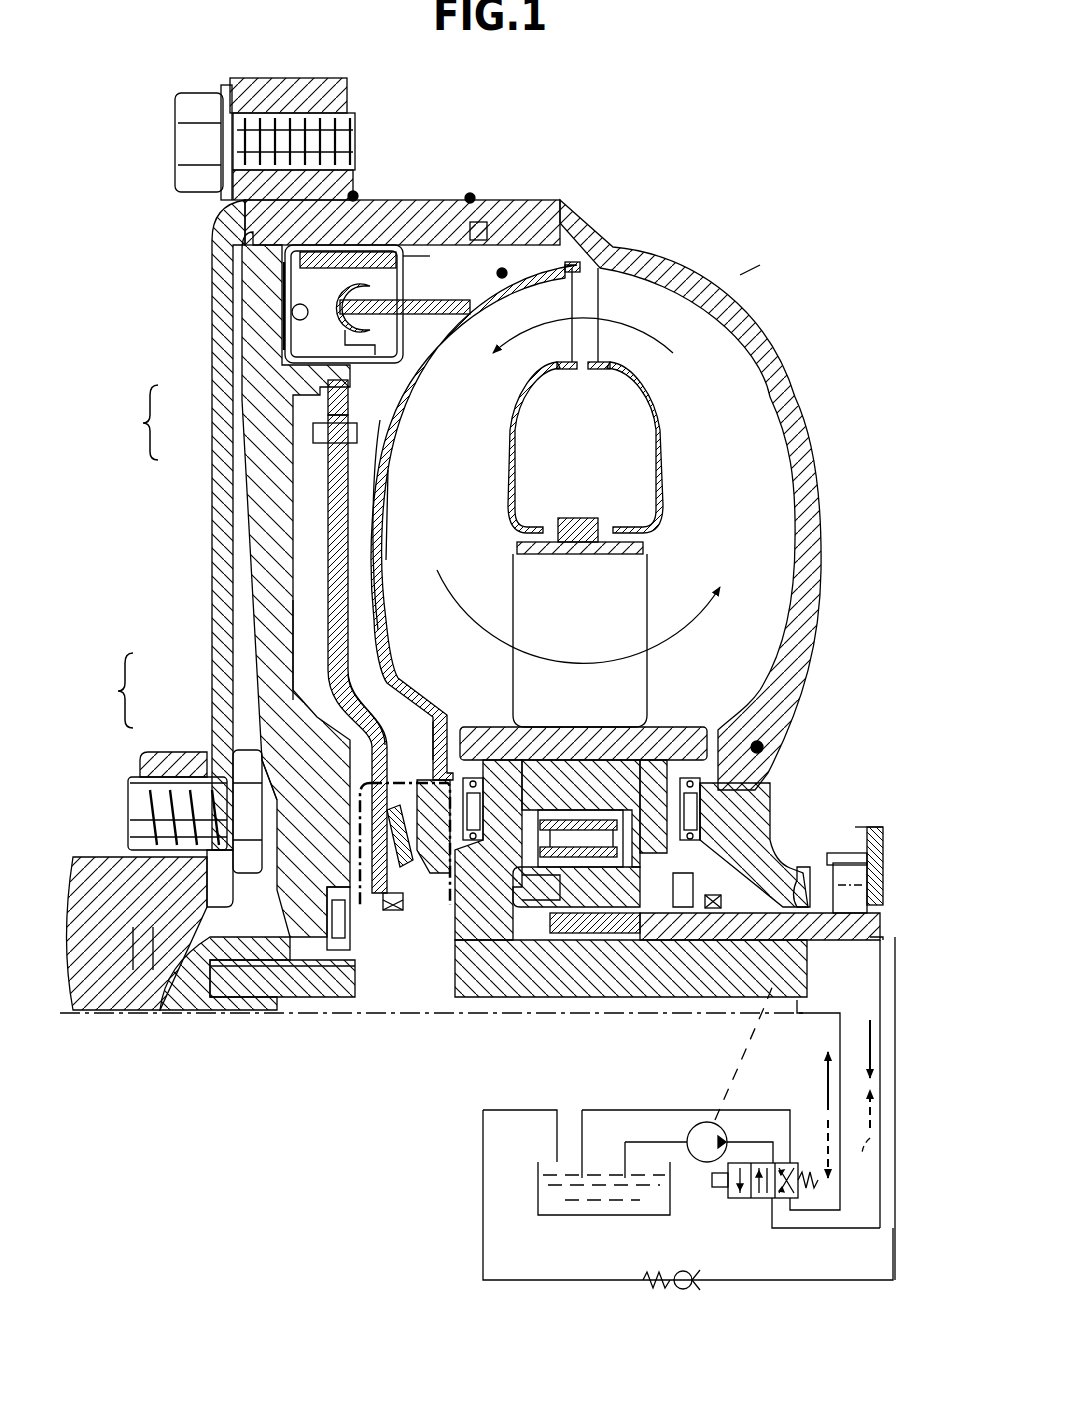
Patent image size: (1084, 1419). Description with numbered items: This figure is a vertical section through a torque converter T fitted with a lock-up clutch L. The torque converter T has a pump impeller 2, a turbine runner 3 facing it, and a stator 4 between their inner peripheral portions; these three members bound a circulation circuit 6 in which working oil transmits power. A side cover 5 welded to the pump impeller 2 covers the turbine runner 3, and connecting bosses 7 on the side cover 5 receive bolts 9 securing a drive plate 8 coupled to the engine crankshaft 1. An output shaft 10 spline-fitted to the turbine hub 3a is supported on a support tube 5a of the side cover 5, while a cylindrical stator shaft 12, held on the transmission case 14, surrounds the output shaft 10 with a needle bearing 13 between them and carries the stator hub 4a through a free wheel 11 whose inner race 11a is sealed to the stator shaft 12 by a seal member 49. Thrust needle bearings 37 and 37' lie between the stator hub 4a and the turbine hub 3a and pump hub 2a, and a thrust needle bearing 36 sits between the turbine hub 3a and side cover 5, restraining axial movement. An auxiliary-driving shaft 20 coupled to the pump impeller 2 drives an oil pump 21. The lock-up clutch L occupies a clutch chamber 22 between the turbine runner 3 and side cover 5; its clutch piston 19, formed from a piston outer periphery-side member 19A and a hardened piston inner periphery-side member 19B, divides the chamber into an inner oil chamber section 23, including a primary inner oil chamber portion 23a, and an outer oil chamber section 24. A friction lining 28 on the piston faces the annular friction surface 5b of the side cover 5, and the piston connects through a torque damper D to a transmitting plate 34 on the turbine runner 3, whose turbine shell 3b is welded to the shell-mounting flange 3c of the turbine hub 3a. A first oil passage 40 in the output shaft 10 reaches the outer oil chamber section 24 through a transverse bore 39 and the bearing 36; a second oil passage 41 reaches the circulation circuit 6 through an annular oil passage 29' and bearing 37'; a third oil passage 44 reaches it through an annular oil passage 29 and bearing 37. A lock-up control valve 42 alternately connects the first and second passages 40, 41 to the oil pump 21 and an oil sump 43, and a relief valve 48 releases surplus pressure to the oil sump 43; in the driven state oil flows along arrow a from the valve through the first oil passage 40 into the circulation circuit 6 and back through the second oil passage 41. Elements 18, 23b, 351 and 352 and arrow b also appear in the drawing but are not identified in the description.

The crankshaft 1 is at (105, 860).
The pump impeller 2 is at (775, 355).
The pump hub 2a is at (757, 800).
The turbine runner 3 is at (547, 293).
The turbine hub 3a is at (447, 900).
The turbine shell 3b is at (377, 463).
The shell-mounting flange 3c is at (398, 690).
The stator 4 is at (586, 651).
The stator hub 4a is at (563, 733).
The side cover 5 is at (260, 532).
The support tube 5a is at (177, 1000).
The annular friction surface 5b is at (287, 273).
The circulation circuit 6 is at (730, 496).
The connecting bosses 7 is at (335, 102).
The drive plate 8 is at (217, 600).
The bolts 9 is at (187, 140).
The output shaft 10 is at (790, 983).
The free wheel 11 is at (580, 797).
The inner race 11a is at (597, 887).
The stator shaft 12 is at (843, 927).
The needle bearing 13 is at (607, 933).
The transmission case 14 is at (870, 833).
The sleeve 18 is at (253, 963).
The clutch piston 19 is at (211, 700).
The piston outer periphery-side member 19A is at (337, 643).
The piston inner periphery-side member 19B is at (277, 760).
The auxiliary-driving shaft 20 is at (803, 887).
The oil pump 21 is at (700, 1160).
The clutch chamber 22 is at (247, 636).
The inner oil chamber section 23 is at (350, 473).
The primary inner oil chamber portion 23a is at (410, 682).
The clutch plate outer portion 23b is at (375, 397).
The outer oil chamber section 24 is at (293, 390).
The friction lining 28 is at (293, 327).
The annular oil passage 29 is at (561, 909).
The annular oil passage 29' is at (762, 826).
The transmitting plate 34 is at (427, 293).
The oil passage 351 is at (687, 877).
The oil passage 352 is at (540, 890).
The thrust needle bearing 36 is at (323, 945).
The thrust needle bearing 37 is at (487, 761).
The thrust needle bearing 37' is at (698, 761).
The transverse bore 39 is at (350, 987).
The first oil passage 40 is at (817, 1020).
The second oil passage 41 is at (797, 1230).
The lock-up control valve 42 is at (743, 1200).
The oil sump 43 is at (537, 1180).
The third oil passage 44 is at (610, 1280).
The relief valve 48 is at (687, 1287).
The seal member 49 is at (710, 910).
The torque damper D is at (407, 330).
The lock-up clutch L is at (405, 255).
The torque converter T is at (740, 277).
The arrow a is at (867, 1040).
The oil flow b is at (826, 1152).